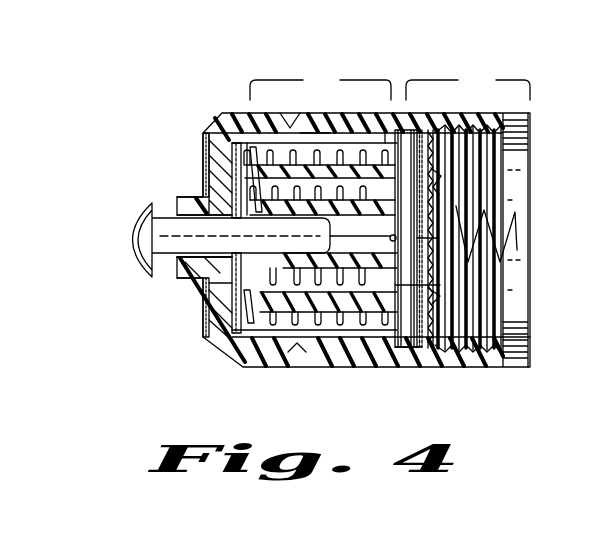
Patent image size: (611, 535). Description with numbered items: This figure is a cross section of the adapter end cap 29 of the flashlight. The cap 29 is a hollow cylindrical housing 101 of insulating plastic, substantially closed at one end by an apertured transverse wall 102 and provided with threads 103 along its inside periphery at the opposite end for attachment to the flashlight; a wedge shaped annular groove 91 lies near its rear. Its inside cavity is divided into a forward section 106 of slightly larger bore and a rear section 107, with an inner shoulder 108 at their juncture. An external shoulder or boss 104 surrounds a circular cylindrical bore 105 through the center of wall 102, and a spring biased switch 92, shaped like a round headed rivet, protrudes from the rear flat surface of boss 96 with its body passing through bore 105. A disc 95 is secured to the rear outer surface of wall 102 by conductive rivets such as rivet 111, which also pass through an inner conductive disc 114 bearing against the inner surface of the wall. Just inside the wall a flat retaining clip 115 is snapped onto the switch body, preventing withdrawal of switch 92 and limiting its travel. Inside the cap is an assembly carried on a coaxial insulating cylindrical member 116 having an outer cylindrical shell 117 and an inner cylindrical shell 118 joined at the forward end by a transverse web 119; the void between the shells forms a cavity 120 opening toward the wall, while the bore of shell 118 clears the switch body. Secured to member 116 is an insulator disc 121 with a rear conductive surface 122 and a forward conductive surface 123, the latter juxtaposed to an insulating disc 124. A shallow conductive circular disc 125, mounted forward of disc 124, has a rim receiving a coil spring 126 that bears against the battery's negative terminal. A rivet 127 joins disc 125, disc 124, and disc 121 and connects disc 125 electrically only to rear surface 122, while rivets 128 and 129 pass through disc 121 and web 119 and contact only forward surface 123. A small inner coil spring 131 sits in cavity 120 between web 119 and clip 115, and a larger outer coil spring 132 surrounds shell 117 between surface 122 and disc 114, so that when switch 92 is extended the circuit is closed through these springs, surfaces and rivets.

The end cap 29 is at (507, 369).
The wedge shaped annular groove 91 is at (310, 113).
The spring biased switch 92 is at (130, 240).
The disc 95 is at (205, 310).
The boss 96 is at (186, 279).
The hollow cylindrical housing 101 is at (417, 367).
The apertured transverse wall 102 is at (217, 333).
The threads 103 is at (490, 355).
The external shoulder or boss 104 is at (200, 200).
The circular cylindrical bore 105 is at (177, 260).
The forward section 106 is at (468, 86).
The rear section 107 is at (314, 201).
The inner shoulder 108 is at (384, 120).
The rivet 111 is at (204, 162).
The inner conductive disc 114 is at (236, 345).
The retaining clip 115 is at (206, 180).
The insulating cylindrical member 116 is at (240, 111).
The outer cylindrical shell 117 is at (286, 320).
The inner cylindrical shell 118 is at (300, 330).
The transverse web 119 is at (363, 120).
The cavity 120 is at (283, 290).
The insulator disc 121 is at (405, 120).
The rear conductive surface 122 is at (406, 350).
The forward conductive surface 123 is at (426, 115).
The insulating disc 124 is at (440, 185).
The shallow conductive circular disc 125 is at (436, 293).
The coil spring 126 is at (517, 238).
The rivet 127 is at (390, 238).
The rivet 128 is at (413, 120).
The rivet 129 is at (436, 303).
The inner coil spring 131 is at (330, 340).
The outer coil spring 132 is at (377, 360).